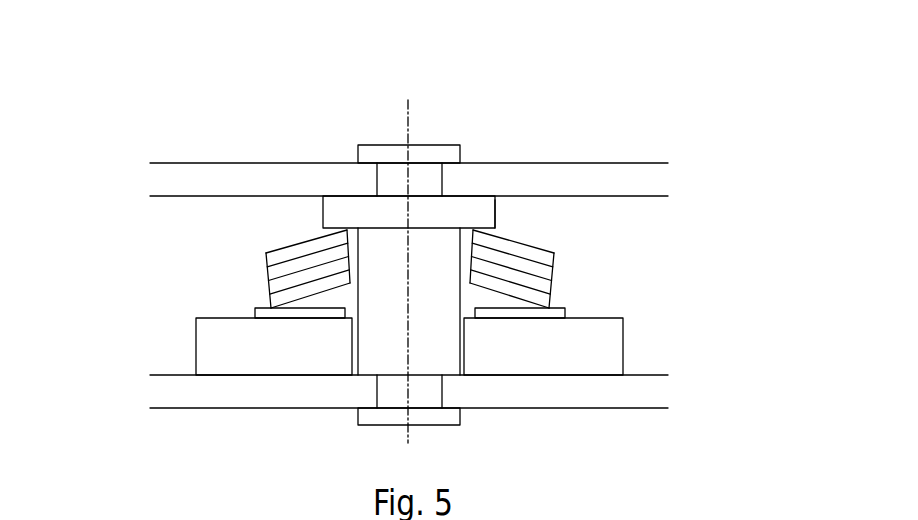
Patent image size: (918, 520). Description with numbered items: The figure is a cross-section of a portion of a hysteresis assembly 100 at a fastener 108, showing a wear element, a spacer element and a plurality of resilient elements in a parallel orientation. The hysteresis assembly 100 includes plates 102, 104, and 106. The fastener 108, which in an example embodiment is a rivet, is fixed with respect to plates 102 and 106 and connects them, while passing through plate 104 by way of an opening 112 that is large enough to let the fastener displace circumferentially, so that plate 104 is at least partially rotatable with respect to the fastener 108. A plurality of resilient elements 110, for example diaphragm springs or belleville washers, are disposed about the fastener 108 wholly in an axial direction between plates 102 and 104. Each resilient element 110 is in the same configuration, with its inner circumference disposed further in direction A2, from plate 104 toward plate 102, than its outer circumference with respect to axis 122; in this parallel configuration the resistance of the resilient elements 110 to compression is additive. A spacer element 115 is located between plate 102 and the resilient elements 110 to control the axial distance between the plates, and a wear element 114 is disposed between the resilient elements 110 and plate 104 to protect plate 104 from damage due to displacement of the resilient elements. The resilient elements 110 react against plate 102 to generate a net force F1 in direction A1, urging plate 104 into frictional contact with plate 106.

The hysteresis assembly 100 is at (616, 92).
The plate 102 is at (190, 180).
The plate 104 is at (196, 346).
The plate 106 is at (158, 388).
The fastener 108 is at (375, 137).
The resilient element 110 is at (307, 240).
The opening 112 is at (463, 377).
The wear element 114 is at (255, 312).
The spacer element 115 is at (495, 213).
The axis 122 is at (410, 225).
The direction A1 is at (768, 74).
The direction A2 is at (795, 80).
The net force F1 is at (768, 234).